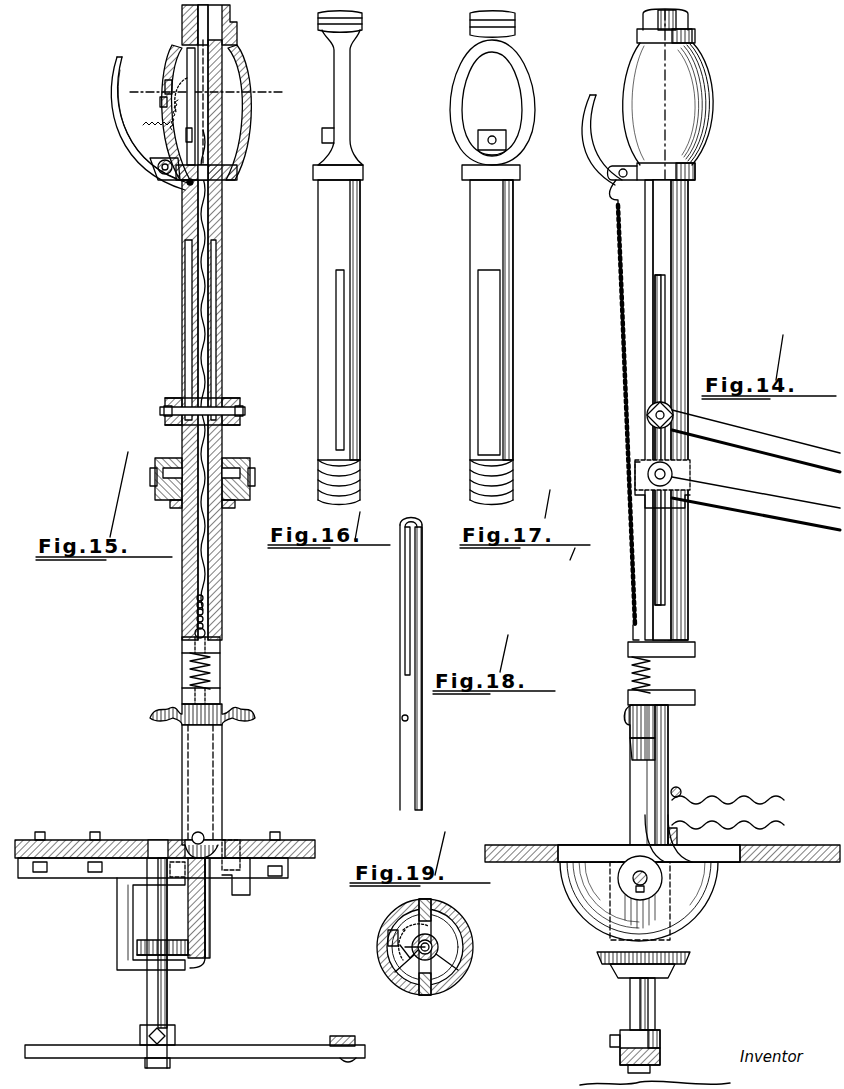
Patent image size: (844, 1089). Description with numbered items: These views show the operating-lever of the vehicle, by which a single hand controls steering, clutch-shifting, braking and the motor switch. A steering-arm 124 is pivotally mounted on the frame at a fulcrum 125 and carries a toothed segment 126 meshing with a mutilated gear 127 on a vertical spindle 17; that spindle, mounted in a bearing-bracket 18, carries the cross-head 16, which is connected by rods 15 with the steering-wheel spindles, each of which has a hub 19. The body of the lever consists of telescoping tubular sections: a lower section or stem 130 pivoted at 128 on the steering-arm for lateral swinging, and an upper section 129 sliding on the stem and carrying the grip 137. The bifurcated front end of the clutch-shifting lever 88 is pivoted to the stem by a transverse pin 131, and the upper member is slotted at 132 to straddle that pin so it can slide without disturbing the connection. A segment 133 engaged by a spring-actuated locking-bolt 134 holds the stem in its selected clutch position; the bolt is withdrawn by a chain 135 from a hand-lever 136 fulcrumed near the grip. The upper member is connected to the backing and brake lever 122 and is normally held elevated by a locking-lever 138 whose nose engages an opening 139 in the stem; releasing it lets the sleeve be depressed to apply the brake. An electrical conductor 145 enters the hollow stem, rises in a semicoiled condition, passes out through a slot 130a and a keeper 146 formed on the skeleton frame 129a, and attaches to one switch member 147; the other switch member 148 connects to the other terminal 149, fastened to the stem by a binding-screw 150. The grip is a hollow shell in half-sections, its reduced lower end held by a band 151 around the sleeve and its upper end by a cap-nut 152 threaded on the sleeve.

In FIG. 15, the rods 15 is at (345, 1036).
In FIG. 14, the rods 15 is at (688, 14).
In FIG. 15, the cross-head 16 is at (247, 1045).
In FIG. 14, the cross-head 16 is at (660, 1050).
In FIG. 15, the vertical spindle 17 is at (147, 997).
In FIG. 14, the vertical spindle 17 is at (630, 1008).
In FIG. 15, the bearing-bracket 18 is at (125, 925).
In FIG. 14, the bearing-bracket 18 is at (615, 972).
In FIG. 15, the hub 19 is at (217, 86).
In FIG. 15, the clutch-shifting lever 88 is at (232, 398).
In FIG. 14, the clutch-shifting lever 88 is at (785, 445).
In FIG. 15, the backing and brake lever 122 is at (240, 458).
In FIG. 14, the backing and brake lever 122 is at (765, 510).
In FIG. 15, the steering-arm 124 is at (210, 790).
In FIG. 14, the steering-arm 124 is at (640, 780).
In FIG. 15, the fulcrum 125 is at (222, 855).
In FIG. 14, the fulcrum 125 is at (632, 870).
In FIG. 15, the toothed segment 126 is at (210, 915).
In FIG. 14, the toothed segment 126 is at (680, 915).
In FIG. 15, the mutilated gear 127 is at (190, 958).
In FIG. 14, the mutilated gear 127 is at (597, 955).
In FIG. 15, the pivot 128 is at (193, 835).
In FIG. 14, the pivot 128 is at (672, 850).
In FIG. 15, the upper section 129 is at (220, 252).
In FIG. 16, the upper section 129 is at (350, 262).
In FIG. 17, the upper section 129 is at (500, 262).
In FIG. 14, the upper section 129 is at (672, 260).
In FIG. 16, the skeleton frame 129a is at (350, 100).
In FIG. 17, the skeleton frame 129a is at (462, 85).
In FIG. 19, the skeleton frame 129a is at (440, 992).
In FIG. 15, the lower section 130 is at (197, 565).
In FIG. 18, the lower section 130 is at (420, 750).
In FIG. 19, the lower section 130 is at (440, 958).
In FIG. 14, the lower section 130 is at (675, 620).
In FIG. 15, the slot 130a is at (189, 50).
In FIG. 18, the slot 130a is at (405, 600).
In FIG. 15, the transverse pin 131 is at (180, 400).
In FIG. 14, the transverse pin 131 is at (675, 415).
In FIG. 15, the slot 132 is at (185, 318).
In FIG. 16, the slot 132 is at (345, 318).
In FIG. 17, the slot 132 is at (488, 305).
In FIG. 14, the slot 132 is at (672, 320).
In FIG. 15, the segment 133 is at (225, 712).
In FIG. 14, the segment 133 is at (630, 728).
In FIG. 15, the locking-bolt 134 is at (215, 670).
In FIG. 14, the locking-bolt 134 is at (632, 668).
In FIG. 15, the chain 135 is at (195, 612).
In FIG. 14, the chain 135 is at (622, 418).
In FIG. 14, the hand-lever 136 is at (588, 128).
In FIG. 15, the grip 137 is at (245, 70).
In FIG. 19, the grip 137 is at (468, 942).
In FIG. 14, the grip 137 is at (665, 43).
In FIG. 15, the locking-lever 138 is at (132, 135).
In FIG. 15, the opening 139 is at (185, 195).
In FIG. 18, the opening 139 is at (400, 718).
In FIG. 15, the electrical conductor 145 is at (212, 548).
In FIG. 19, the electrical conductor 145 is at (400, 958).
In FIG. 14, the electrical conductor 145 is at (728, 816).
In FIG. 15, the keeper 146 is at (158, 160).
In FIG. 16, the keeper 146 is at (322, 135).
In FIG. 17, the keeper 146 is at (490, 130).
In FIG. 19, the keeper 146 is at (398, 975).
In FIG. 15, the switch member 147 is at (160, 106).
In FIG. 19, the switch member 147 is at (388, 940).
In FIG. 15, the switch member 148 is at (166, 82).
In FIG. 19, the switch member 148 is at (398, 938).
In FIG. 14, the terminal 149 is at (738, 798).
In FIG. 14, the binding-screw 150 is at (678, 788).
In FIG. 15, the band 151 is at (238, 160).
In FIG. 14, the band 151 is at (700, 175).
In FIG. 15, the cap-nut 152 is at (230, 18).
In FIG. 14, the cap-nut 152 is at (643, 20).